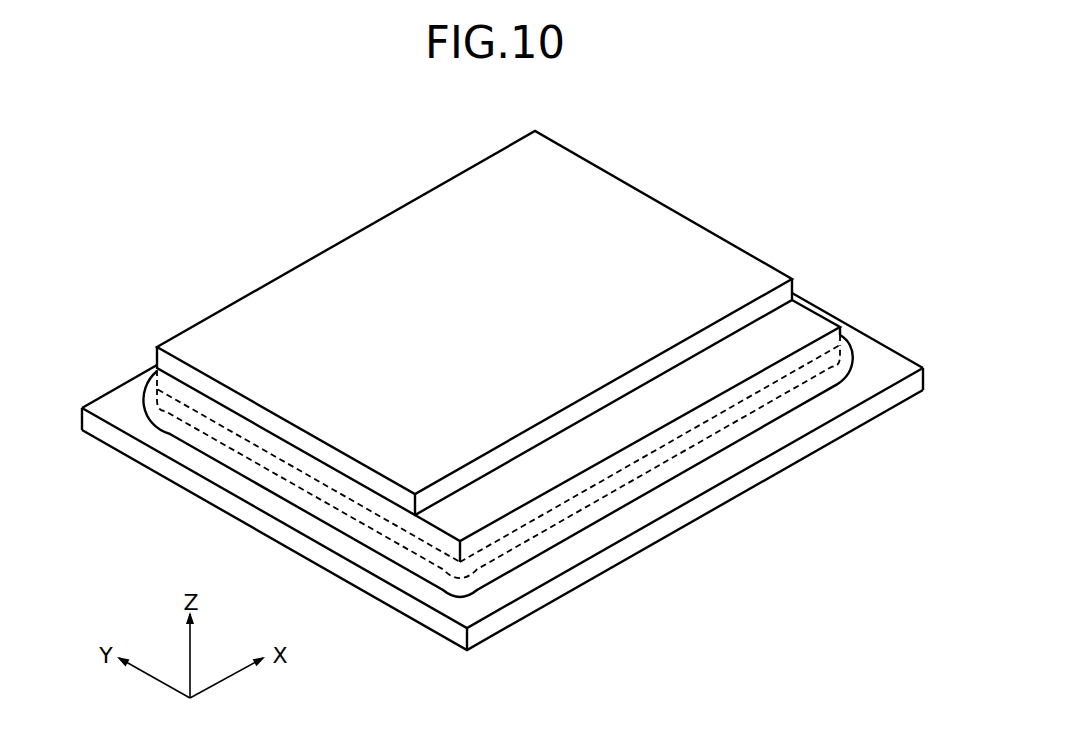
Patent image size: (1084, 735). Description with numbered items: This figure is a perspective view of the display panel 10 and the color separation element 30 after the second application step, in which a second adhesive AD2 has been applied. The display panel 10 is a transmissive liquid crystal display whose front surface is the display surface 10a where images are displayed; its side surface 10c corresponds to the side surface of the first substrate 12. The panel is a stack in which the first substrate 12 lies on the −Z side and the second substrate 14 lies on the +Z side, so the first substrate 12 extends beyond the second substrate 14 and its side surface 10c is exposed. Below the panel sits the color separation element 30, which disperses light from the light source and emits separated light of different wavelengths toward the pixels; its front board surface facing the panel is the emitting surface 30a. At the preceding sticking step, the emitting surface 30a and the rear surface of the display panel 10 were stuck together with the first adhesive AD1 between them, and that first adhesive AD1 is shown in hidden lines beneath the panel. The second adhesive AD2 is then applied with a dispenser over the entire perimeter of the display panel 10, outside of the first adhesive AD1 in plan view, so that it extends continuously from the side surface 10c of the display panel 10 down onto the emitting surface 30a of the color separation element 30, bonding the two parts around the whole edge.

The display panel 10 is at (511, 329).
The display surface 10a is at (355, 255).
The side surface 10c is at (697, 417).
The first substrate 12 is at (511, 402).
The second substrate 14 is at (474, 323).
The color separation element 30 is at (505, 461).
The emitting surface 30a is at (120, 400).
The first adhesive AD1 is at (252, 448).
The second adhesive AD2 is at (528, 553).